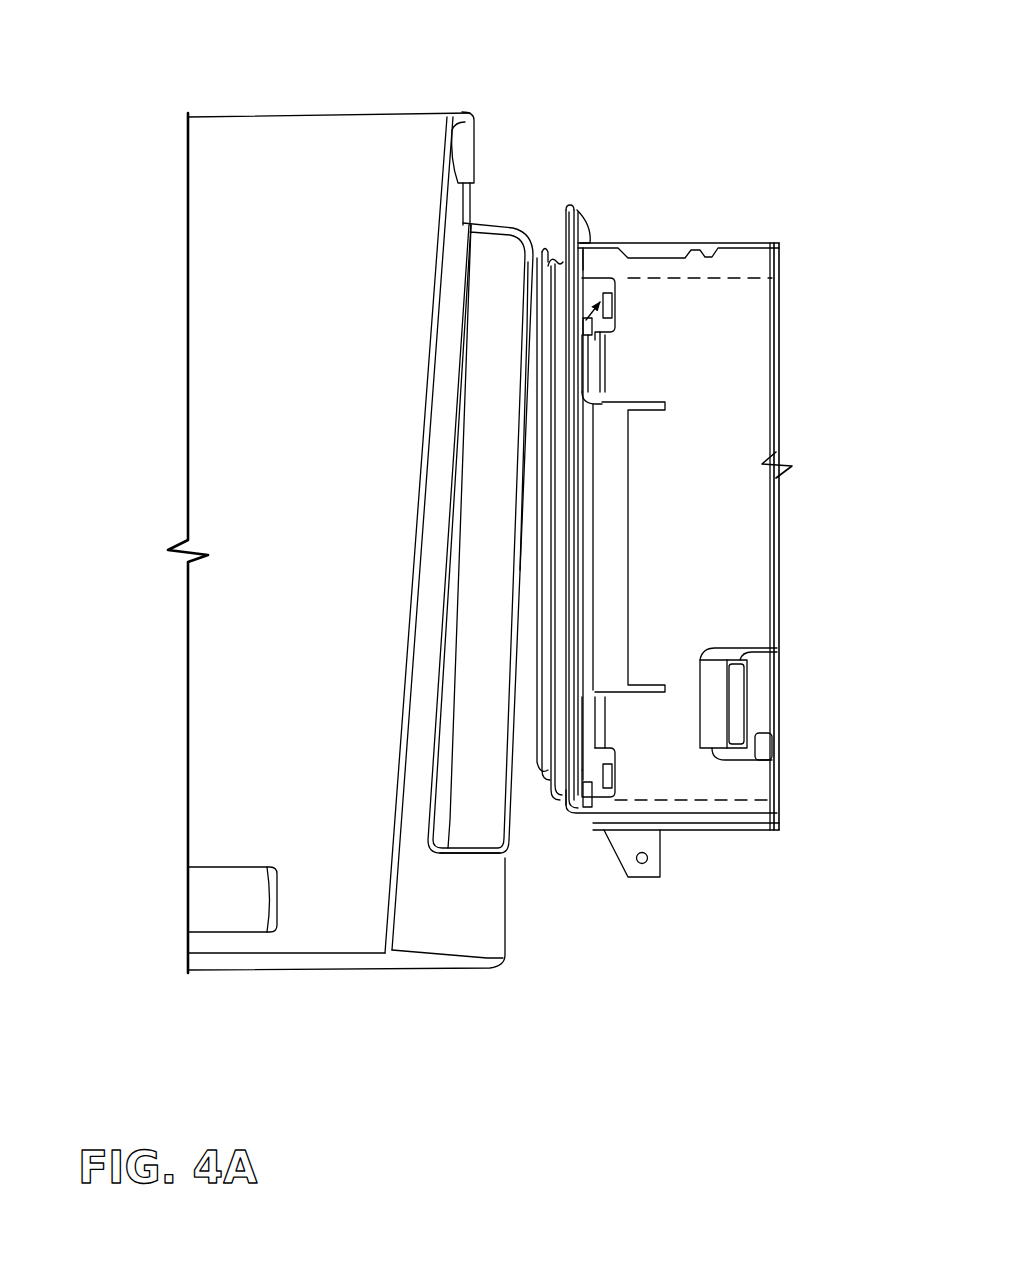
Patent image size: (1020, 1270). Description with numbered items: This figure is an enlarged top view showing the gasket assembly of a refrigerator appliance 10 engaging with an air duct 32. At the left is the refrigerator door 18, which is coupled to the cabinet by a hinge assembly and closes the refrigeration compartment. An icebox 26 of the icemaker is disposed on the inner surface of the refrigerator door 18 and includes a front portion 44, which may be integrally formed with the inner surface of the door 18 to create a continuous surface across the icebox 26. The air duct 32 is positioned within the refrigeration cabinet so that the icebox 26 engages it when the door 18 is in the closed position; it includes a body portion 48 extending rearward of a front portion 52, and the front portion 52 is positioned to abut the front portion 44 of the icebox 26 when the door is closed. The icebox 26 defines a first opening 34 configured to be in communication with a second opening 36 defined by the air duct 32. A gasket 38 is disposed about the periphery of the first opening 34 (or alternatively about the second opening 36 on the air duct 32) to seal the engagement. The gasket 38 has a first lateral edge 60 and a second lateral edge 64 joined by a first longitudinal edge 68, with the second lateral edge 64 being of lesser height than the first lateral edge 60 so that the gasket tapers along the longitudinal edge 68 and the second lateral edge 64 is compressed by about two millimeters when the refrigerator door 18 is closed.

The refrigerator appliance 10 is at (262, 88).
The refrigerator door 18 is at (240, 267).
The icebox 26 is at (488, 260).
The air duct 32 is at (730, 263).
The first opening 34 is at (541, 683).
The second opening 36 is at (620, 290).
The gasket 38 is at (537, 762).
The front portion 44 is at (470, 813).
The body portion 48 is at (763, 263).
The front portion 52 is at (580, 242).
The first lateral edge 60 is at (548, 740).
The second lateral edge 64 is at (559, 258).
The first longitudinal edge 68 is at (552, 578).